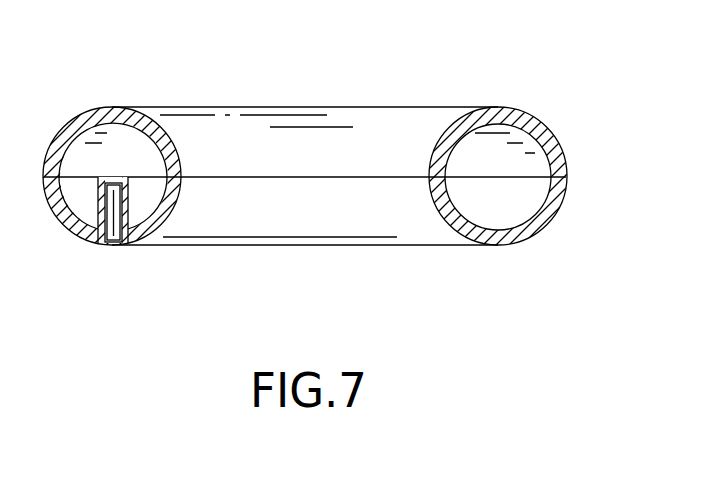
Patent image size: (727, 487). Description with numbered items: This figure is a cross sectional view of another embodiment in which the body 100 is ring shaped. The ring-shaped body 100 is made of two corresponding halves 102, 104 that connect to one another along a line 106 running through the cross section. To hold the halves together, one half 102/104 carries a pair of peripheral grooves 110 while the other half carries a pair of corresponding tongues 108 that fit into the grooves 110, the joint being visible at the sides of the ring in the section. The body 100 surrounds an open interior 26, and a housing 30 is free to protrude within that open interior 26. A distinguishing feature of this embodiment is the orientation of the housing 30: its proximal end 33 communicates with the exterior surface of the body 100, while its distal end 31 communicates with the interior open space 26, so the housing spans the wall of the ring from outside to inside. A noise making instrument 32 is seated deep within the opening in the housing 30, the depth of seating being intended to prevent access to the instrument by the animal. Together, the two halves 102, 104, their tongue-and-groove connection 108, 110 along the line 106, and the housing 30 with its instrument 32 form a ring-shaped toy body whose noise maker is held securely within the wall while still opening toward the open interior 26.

The body 100 is at (361, 94).
The half of the body 102 is at (263, 122).
The half of the body 104 is at (237, 232).
The line 106 is at (416, 178).
The tongues 108 is at (557, 181).
The peripheral grooves 110 is at (557, 174).
The open interior 26 is at (117, 128).
The housing 30 is at (97, 206).
The distal end of the housing 31 is at (114, 177).
The noise making instrument 32 is at (105, 244).
The proximal end of the housing 33 is at (128, 244).